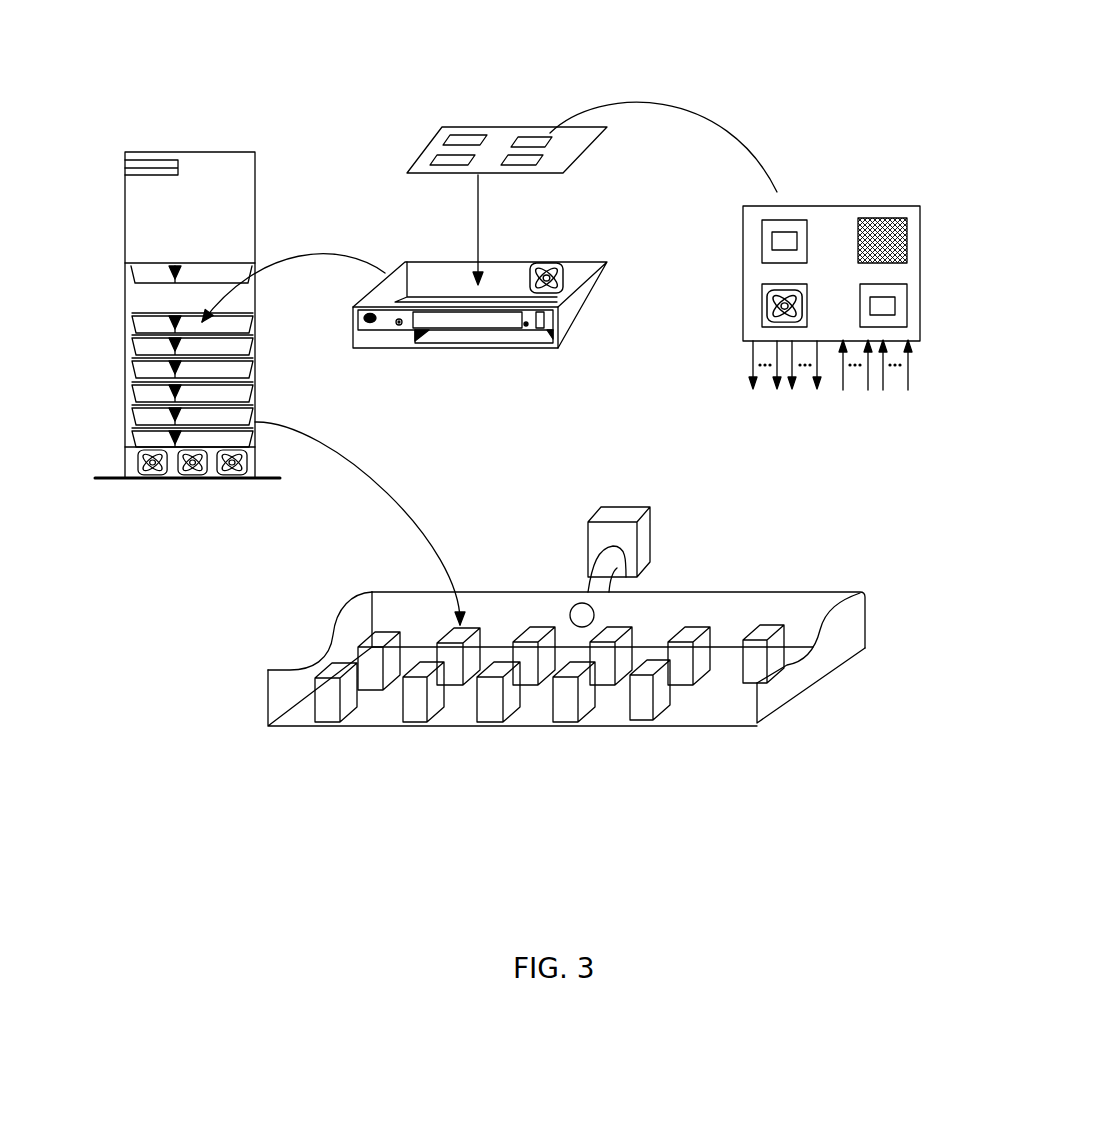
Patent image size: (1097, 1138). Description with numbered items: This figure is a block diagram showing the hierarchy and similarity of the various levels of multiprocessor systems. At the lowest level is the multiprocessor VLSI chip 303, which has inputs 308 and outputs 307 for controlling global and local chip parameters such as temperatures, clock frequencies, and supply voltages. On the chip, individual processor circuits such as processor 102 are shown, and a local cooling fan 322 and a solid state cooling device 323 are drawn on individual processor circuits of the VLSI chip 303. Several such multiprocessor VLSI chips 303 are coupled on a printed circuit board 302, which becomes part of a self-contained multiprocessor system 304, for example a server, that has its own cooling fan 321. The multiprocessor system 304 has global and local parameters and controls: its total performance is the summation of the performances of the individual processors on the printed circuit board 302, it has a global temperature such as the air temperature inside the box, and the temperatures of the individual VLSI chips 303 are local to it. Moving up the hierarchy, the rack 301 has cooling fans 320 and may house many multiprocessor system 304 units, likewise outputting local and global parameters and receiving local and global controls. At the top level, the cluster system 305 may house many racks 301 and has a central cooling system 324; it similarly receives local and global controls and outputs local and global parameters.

The processor 102 is at (762, 235).
The rack 301 is at (205, 152).
The printed circuit board 302 is at (480, 127).
The multiprocessor VLSI chip 303 is at (545, 140).
The multiprocessor system 304 is at (205, 270).
The cluster system 305 is at (565, 728).
The outputs 307 is at (780, 428).
The inputs 308 is at (878, 428).
The cooling fans 320 is at (250, 462).
The cooling fan 321 is at (545, 263).
The local cooling fan 322 is at (773, 300).
The solid state cooling device 323 is at (858, 238).
The central cooling system 324 is at (607, 513).